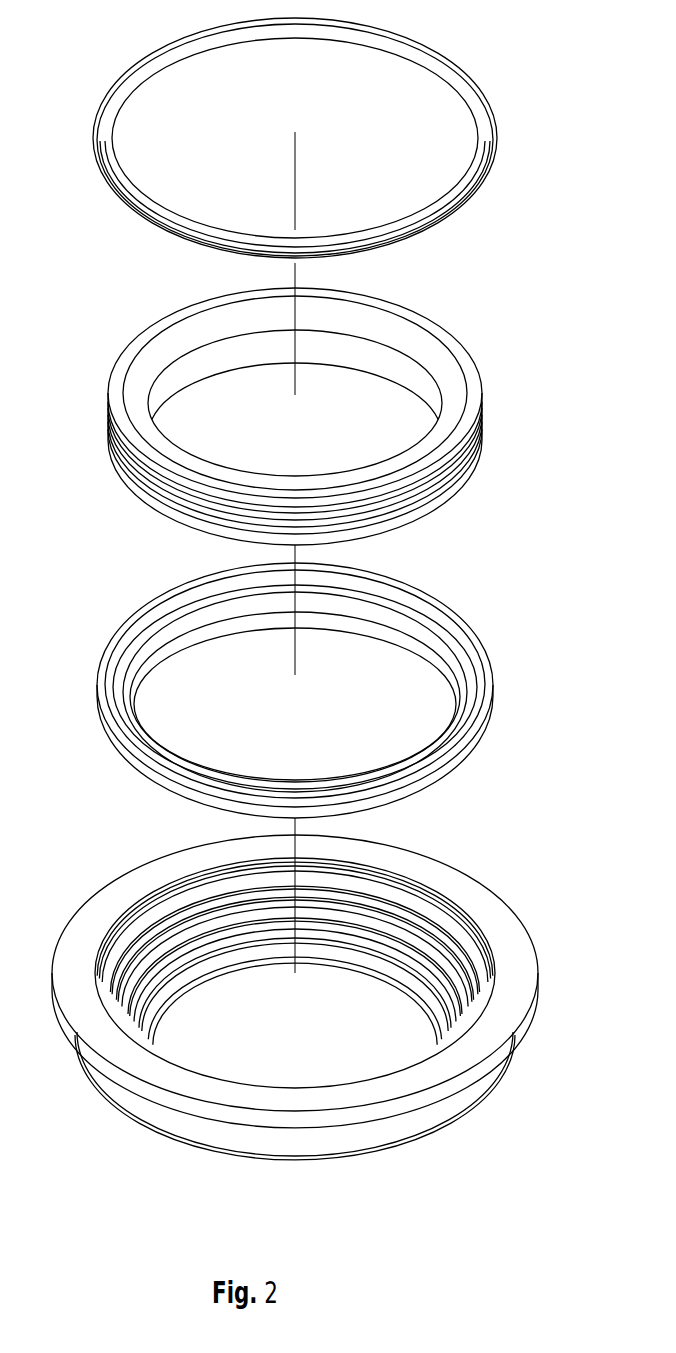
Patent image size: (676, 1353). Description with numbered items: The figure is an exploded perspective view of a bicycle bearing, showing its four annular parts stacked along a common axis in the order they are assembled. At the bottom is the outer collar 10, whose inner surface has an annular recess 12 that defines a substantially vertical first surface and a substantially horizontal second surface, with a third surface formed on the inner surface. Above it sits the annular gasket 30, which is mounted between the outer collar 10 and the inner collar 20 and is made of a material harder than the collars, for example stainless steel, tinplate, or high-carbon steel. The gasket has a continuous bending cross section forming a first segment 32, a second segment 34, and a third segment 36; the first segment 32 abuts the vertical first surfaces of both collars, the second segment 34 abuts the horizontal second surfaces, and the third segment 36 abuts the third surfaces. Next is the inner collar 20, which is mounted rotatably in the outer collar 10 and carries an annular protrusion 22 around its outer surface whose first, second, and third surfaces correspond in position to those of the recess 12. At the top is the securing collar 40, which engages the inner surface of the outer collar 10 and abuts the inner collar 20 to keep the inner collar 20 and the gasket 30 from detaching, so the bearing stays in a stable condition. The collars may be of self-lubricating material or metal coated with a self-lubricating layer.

The outer collar 10 is at (505, 860).
The annular recess 12 is at (208, 918).
The inner collar 20 is at (445, 300).
The annular protrusion 22 is at (165, 477).
The annular gasket 30 is at (460, 580).
The first segment 32 is at (170, 602).
The second segment 34 is at (127, 667).
The third segment 36 is at (193, 638).
The securing collar 40 is at (447, 40).